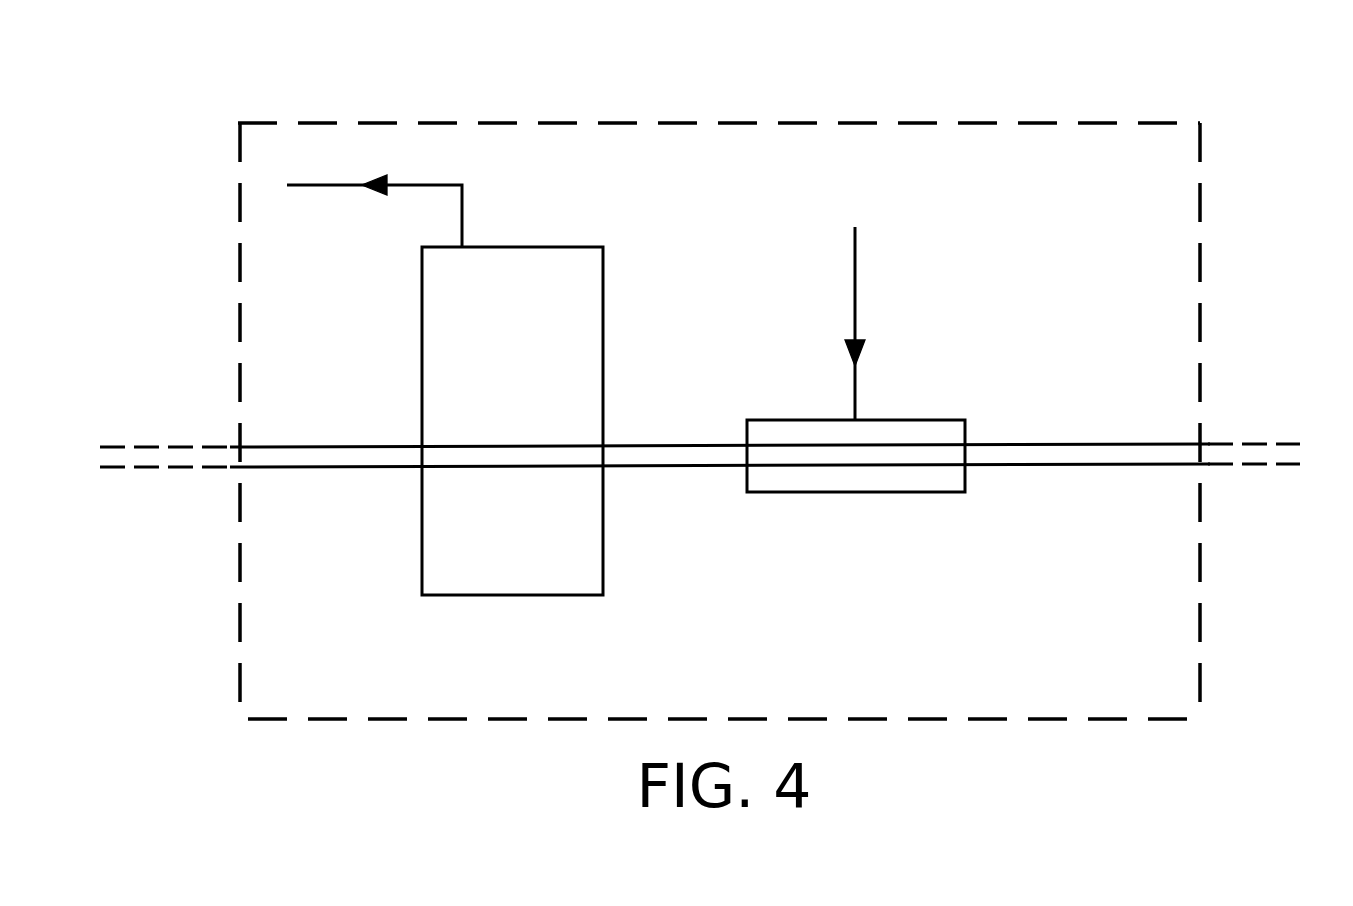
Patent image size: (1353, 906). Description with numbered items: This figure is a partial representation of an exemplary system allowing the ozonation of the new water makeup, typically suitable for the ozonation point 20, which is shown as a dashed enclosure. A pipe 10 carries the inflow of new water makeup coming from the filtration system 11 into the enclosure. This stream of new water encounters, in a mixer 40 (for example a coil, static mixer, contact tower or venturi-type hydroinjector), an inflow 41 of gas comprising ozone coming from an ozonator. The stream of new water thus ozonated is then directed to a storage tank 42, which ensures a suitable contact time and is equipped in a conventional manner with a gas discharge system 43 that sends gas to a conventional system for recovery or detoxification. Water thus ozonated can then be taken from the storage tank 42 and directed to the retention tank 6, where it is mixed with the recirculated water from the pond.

The retention tank 6 is at (90, 475).
The pipe 10 is at (1070, 443).
The filtration system 11 is at (1310, 468).
The ozonation point 20 is at (980, 120).
The mixer 40 is at (805, 492).
The inflow of gas comprising ozone 41 is at (855, 295).
The storage tank 42 is at (603, 343).
The gas discharge system 43 is at (335, 186).